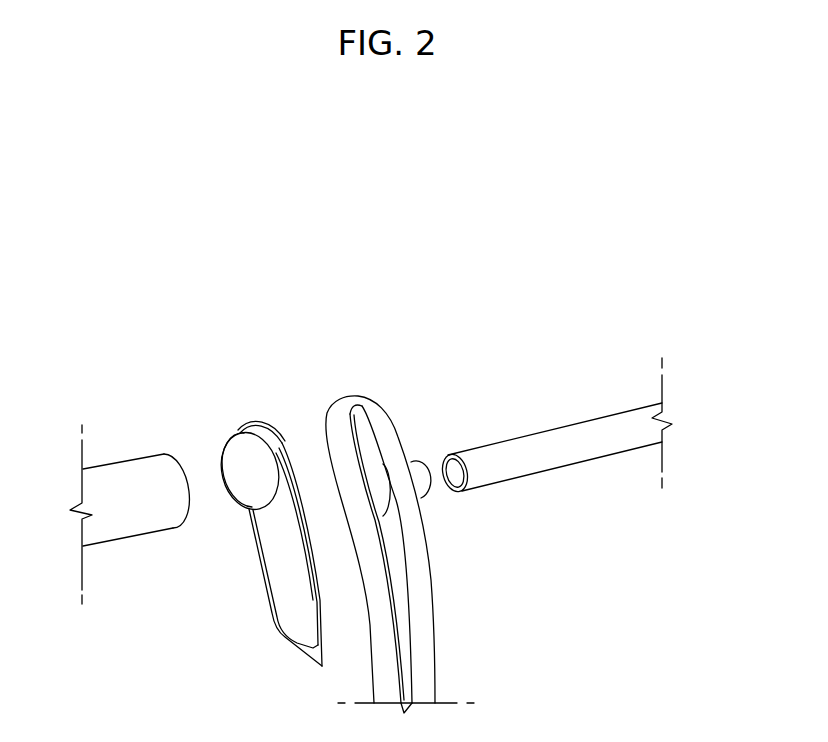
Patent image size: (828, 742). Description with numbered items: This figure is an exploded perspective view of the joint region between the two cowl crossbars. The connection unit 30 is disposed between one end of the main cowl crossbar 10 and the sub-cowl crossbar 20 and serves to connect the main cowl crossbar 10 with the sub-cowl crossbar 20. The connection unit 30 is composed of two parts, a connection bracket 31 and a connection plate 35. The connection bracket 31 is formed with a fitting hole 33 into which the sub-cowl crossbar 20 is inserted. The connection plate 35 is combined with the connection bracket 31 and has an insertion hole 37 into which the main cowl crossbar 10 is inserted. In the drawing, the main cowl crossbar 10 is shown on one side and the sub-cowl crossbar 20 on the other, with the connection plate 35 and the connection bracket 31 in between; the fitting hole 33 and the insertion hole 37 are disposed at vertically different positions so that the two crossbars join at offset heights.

The main cowl crossbar 10 is at (122, 469).
The sub-cowl crossbar 20 is at (545, 460).
The connection unit 30 is at (434, 458).
The connection bracket 31 is at (430, 612).
The fitting hole 33 is at (430, 487).
The connection plate 35 is at (254, 543).
The insertion hole 37 is at (250, 469).